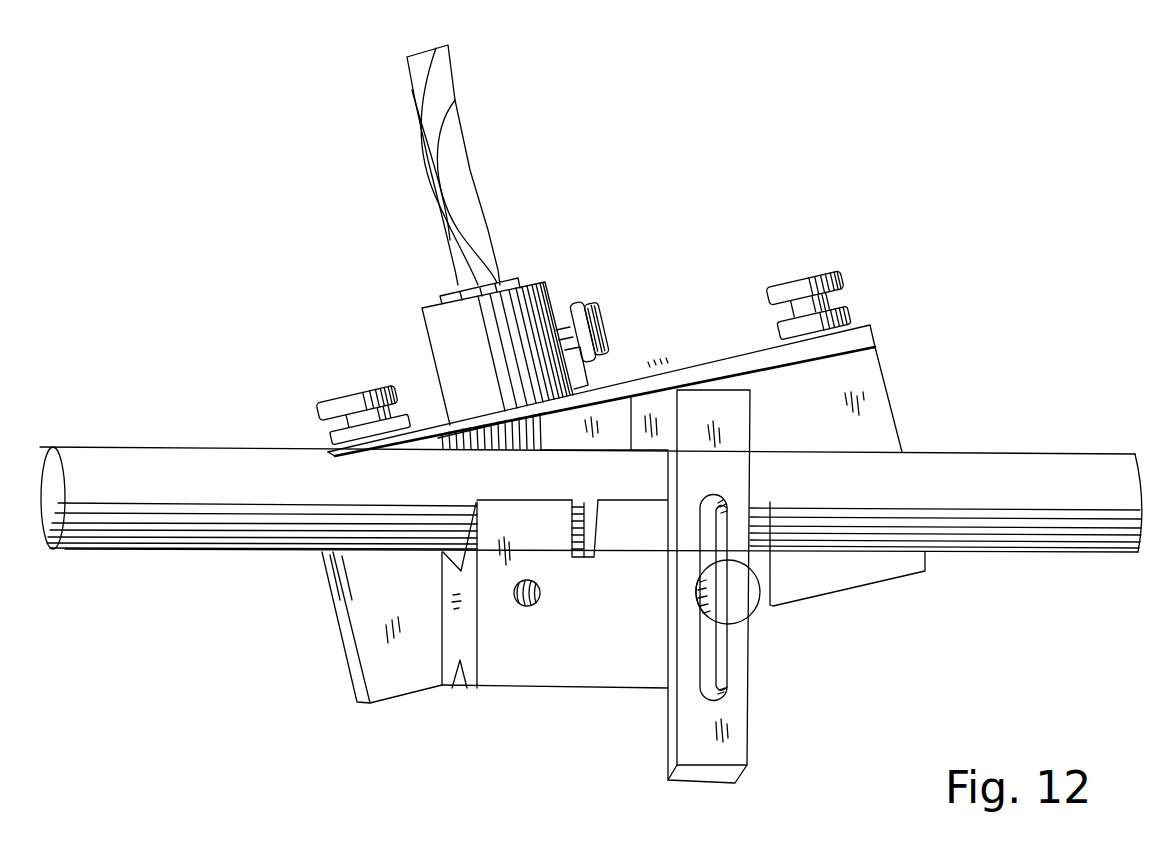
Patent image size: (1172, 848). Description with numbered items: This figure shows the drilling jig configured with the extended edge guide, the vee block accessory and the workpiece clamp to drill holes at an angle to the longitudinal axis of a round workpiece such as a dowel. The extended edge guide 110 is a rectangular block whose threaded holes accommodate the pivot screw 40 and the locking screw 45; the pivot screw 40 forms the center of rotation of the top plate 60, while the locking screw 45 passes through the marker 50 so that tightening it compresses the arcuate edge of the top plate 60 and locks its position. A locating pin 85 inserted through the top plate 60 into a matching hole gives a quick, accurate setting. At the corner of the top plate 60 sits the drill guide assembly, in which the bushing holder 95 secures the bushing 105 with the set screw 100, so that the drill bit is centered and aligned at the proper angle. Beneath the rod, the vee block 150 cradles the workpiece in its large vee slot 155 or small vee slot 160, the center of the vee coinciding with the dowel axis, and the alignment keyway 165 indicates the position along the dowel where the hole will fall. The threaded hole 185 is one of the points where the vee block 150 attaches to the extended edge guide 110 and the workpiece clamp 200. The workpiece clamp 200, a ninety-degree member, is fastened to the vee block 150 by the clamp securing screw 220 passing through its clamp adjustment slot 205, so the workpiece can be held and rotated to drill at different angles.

The pivot screw 40 is at (803, 276).
The locking screw 45 is at (337, 393).
The marker 50 is at (324, 448).
The top plate 60 is at (700, 365).
The locating pin 85 is at (575, 382).
The bushing holder 95 is at (545, 282).
The set screw 100 is at (594, 310).
The bushing 105 is at (441, 295).
The extended edge guide 110 is at (882, 362).
The vee block 150 is at (507, 690).
The large vee slot 155 is at (447, 562).
The small vee slot 160 is at (457, 689).
The alignment keyway 165 is at (598, 527).
The threaded hole 185 is at (515, 598).
The workpiece clamp 200 is at (717, 785).
The clamp adjustment slot 205 is at (740, 672).
The clamp securing screw 220 is at (745, 607).